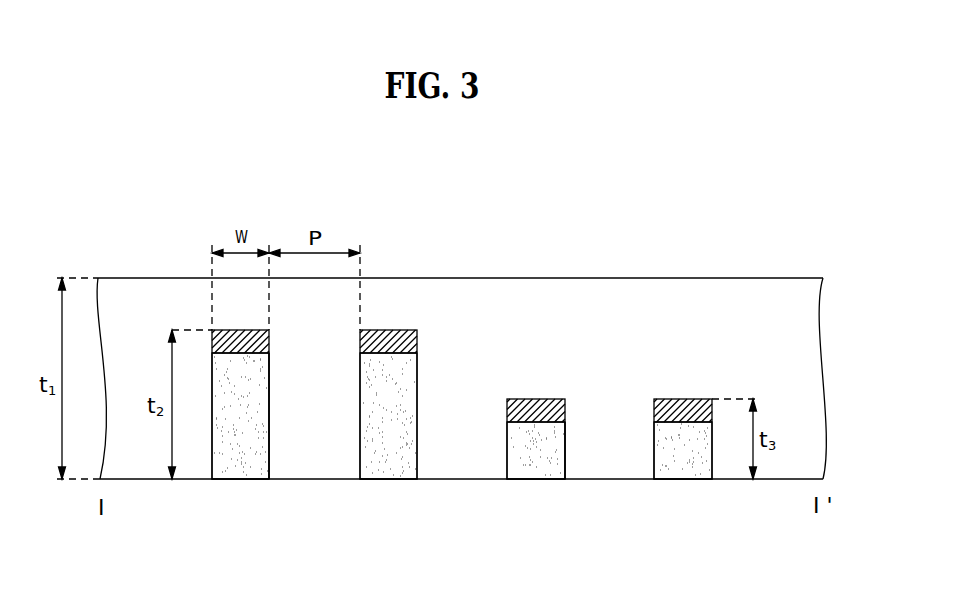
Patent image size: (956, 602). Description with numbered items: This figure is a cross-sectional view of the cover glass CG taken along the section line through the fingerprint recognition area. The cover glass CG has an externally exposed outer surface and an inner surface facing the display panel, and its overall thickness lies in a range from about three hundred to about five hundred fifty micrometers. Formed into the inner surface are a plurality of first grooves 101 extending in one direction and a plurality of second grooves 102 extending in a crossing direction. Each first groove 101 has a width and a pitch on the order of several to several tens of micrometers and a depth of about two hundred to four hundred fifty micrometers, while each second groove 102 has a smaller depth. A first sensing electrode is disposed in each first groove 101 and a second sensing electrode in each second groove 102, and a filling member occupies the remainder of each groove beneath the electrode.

The first groove 101 is at (268, 452).
The second groove 102 is at (562, 450).
The cover glass CG is at (147, 232).